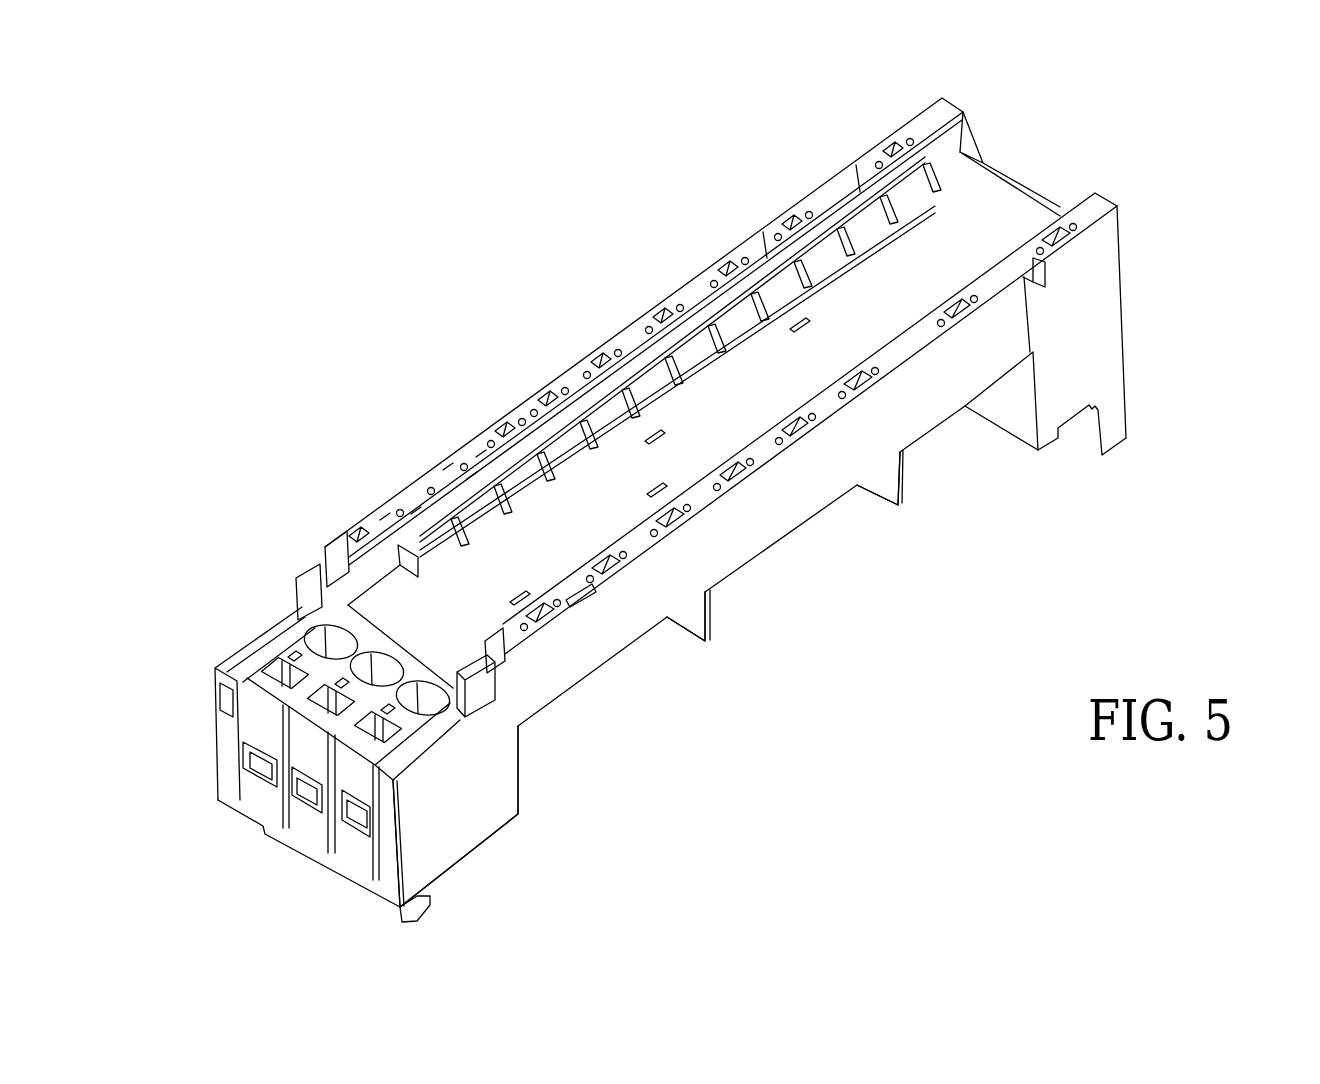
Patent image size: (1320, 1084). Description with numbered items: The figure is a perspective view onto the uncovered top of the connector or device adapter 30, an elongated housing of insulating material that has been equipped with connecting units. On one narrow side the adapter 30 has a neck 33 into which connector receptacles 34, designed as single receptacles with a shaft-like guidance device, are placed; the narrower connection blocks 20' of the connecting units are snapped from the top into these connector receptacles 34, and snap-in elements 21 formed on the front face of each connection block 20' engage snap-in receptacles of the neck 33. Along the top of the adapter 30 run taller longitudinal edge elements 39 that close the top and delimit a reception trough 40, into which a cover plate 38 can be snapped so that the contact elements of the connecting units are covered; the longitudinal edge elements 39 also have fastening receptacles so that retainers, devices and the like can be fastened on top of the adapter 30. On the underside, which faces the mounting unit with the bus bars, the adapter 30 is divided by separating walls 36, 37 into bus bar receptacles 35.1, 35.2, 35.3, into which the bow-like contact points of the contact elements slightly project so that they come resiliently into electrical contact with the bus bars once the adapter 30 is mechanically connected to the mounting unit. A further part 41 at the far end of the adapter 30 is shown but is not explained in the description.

The connection block 20' is at (311, 756).
The snap-in elements 21 is at (262, 776).
The connector or device adapter 30 is at (552, 368).
The neck 33 is at (473, 835).
The connector receptacles 34 is at (452, 667).
The bus bar receptacle 35.1 is at (598, 728).
The bus bar receptacle 35.2 is at (834, 567).
The bus bar receptacle 35.3 is at (950, 438).
The separating wall 36 is at (685, 618).
The separating wall 37 is at (885, 487).
The cover plate 38 is at (745, 365).
The longitudinal edge elements 39 is at (761, 247).
The reception trough 40 is at (1062, 207).
The end block 41 is at (1110, 347).